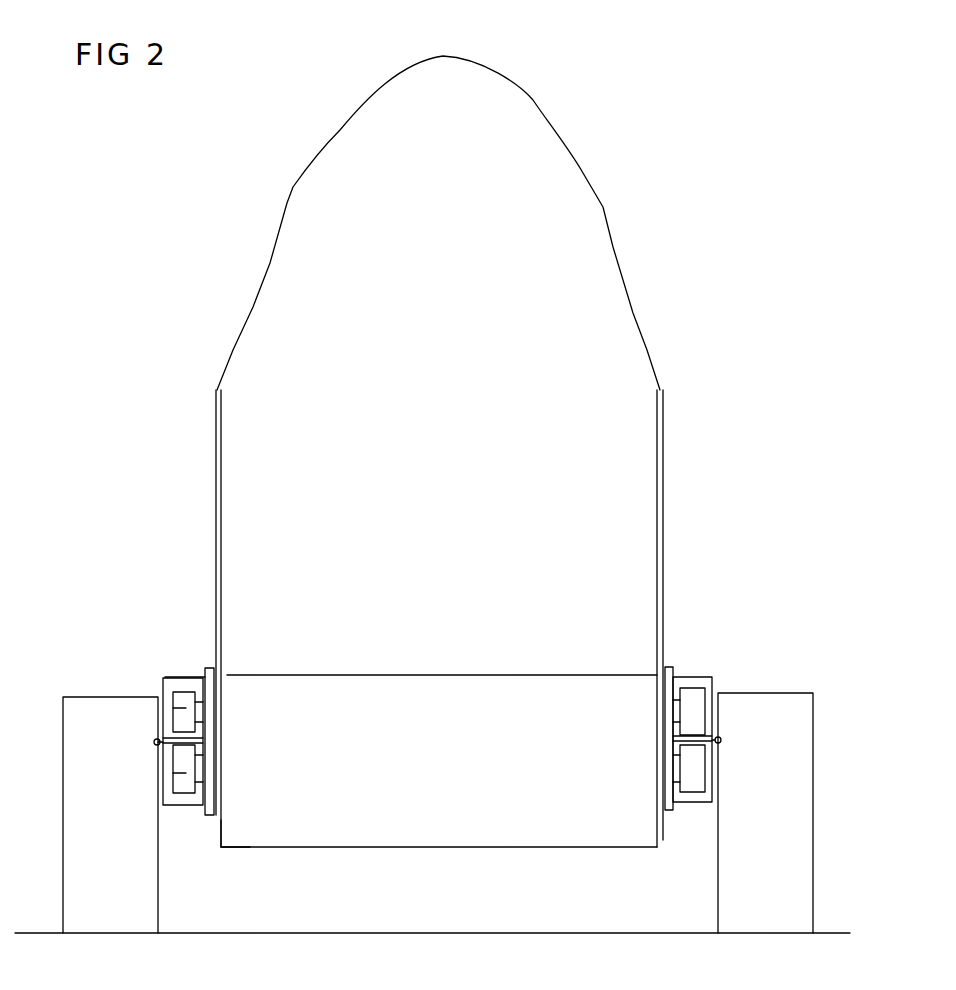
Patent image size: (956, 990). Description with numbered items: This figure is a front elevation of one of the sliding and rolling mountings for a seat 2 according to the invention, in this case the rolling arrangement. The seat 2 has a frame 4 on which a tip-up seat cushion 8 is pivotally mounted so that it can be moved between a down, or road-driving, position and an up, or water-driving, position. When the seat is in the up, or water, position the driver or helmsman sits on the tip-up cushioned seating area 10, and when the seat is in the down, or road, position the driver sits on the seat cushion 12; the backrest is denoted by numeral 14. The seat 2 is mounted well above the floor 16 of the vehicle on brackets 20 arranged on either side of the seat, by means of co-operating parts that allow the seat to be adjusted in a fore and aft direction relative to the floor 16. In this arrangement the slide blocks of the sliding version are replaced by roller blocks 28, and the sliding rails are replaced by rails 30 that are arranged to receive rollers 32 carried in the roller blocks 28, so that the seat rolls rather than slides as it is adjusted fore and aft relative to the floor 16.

The seat 2 is at (605, 129).
The frame 4 is at (670, 483).
The tip-up seat cushion 8 is at (215, 833).
The tip-up cushioned seating area 10 is at (488, 781).
The seat cushion 12 is at (442, 667).
The backrest 14 is at (452, 434).
The floor 16 is at (558, 930).
The bracket 20 is at (98, 703).
The roller block 28 is at (177, 680).
The rail 30 is at (200, 740).
The roller 32 is at (173, 708).